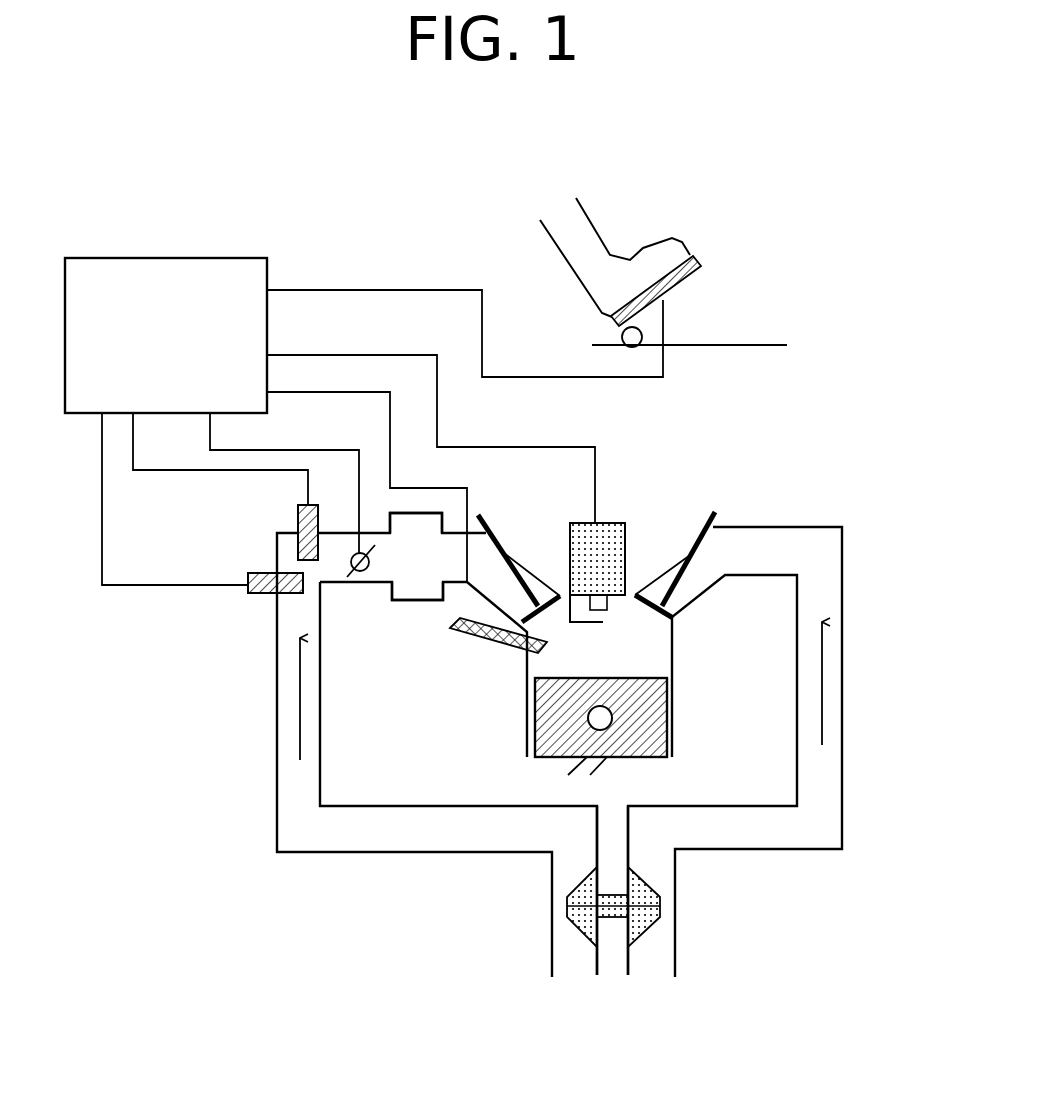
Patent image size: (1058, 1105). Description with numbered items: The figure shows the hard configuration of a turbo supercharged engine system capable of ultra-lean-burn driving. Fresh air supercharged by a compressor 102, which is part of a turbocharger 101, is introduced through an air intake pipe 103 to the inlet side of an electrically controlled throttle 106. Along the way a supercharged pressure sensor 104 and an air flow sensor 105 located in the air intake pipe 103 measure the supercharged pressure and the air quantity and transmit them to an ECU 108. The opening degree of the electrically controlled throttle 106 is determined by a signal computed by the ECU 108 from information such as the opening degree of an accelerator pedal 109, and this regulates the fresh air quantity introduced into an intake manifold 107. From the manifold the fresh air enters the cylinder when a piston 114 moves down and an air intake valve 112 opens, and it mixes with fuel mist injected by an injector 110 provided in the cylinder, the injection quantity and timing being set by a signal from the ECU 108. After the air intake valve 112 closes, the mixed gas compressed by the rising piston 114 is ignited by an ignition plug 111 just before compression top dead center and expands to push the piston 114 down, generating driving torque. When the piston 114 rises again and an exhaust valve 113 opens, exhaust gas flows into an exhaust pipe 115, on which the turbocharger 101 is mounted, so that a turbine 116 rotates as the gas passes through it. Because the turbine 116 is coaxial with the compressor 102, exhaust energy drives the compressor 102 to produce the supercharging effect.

The turbocharger 101 is at (613, 915).
The compressor 102 is at (568, 900).
The air intake pipe 103 is at (295, 827).
The supercharged pressure sensor 104 is at (253, 594).
The air flow sensor 105 is at (297, 517).
The electrically controlled throttle 106 is at (362, 573).
The intake manifold 107 is at (423, 527).
The ECU 108 is at (203, 258).
The accelerator pedal 109 is at (680, 292).
The injector 110 is at (467, 640).
The ignition plug 111 is at (608, 523).
The air intake valve 112 is at (485, 521).
The exhaust valve 113 is at (715, 518).
The piston 114 is at (630, 678).
The exhaust pipe 115 is at (837, 815).
The turbine 116 is at (660, 902).